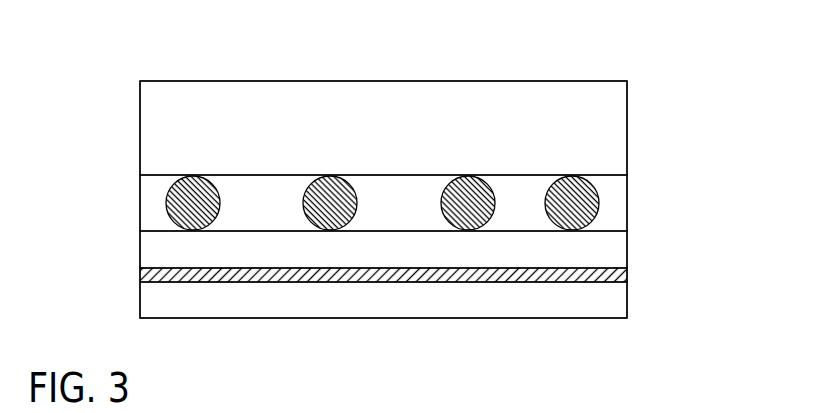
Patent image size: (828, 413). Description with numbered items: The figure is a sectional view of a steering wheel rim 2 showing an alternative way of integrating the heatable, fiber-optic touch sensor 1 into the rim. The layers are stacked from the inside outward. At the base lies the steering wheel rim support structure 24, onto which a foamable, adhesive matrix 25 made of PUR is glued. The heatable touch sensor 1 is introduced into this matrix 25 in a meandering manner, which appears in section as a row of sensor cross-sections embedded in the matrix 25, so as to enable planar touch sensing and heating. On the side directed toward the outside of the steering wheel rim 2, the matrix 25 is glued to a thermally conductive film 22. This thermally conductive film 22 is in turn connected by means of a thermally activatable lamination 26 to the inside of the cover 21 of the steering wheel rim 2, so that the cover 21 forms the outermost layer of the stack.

The steering wheel rim 2 is at (181, 60).
The steering wheel rim support structure 24 is at (610, 126).
The foamable, adhesive matrix 25 is at (153, 206).
The heatable, fiber-optic touch sensor 1 is at (592, 200).
The thermally conductive film 22 is at (609, 254).
The thermally activatable lamination 26 is at (153, 275).
The cover 21 is at (609, 303).